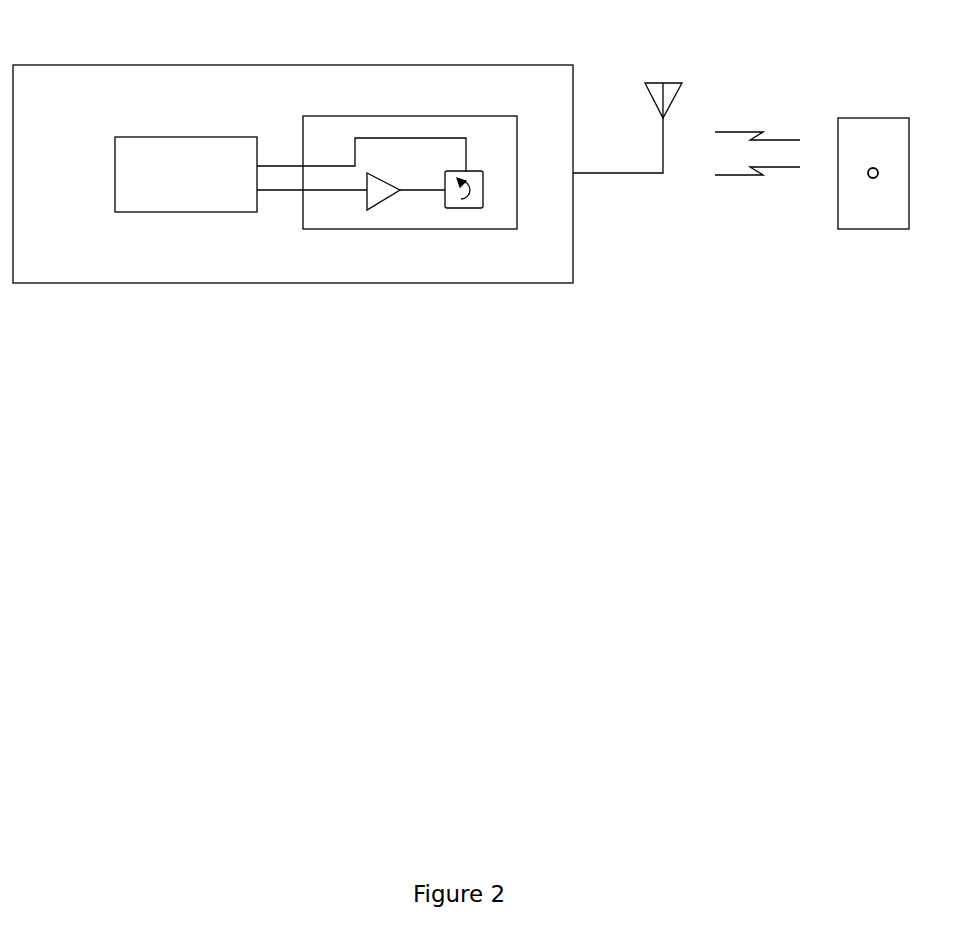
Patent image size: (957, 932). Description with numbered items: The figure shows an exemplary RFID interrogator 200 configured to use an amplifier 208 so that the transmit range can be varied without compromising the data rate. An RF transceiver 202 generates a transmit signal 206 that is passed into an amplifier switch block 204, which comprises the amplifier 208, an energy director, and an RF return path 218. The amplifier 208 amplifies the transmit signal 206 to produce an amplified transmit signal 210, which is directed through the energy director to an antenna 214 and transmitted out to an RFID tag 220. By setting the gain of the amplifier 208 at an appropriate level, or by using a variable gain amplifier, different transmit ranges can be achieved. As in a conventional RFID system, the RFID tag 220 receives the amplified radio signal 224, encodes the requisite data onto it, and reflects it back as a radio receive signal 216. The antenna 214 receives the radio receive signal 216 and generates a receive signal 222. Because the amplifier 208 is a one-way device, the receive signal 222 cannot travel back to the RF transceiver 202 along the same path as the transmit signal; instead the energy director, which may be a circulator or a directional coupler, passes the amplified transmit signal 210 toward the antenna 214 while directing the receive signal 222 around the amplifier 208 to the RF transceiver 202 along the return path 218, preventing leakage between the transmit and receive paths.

The RFID interrogator 200 is at (293, 64).
The RF transceiver 202 is at (133, 137).
The amplifier switch block 204 is at (412, 230).
The transmit signal 206 is at (288, 199).
The amplifier 208 is at (393, 195).
The amplified transmit signal 210 is at (577, 156).
The antenna 214 is at (678, 83).
The radio receive signal 216 is at (738, 187).
The RF return path 218 is at (467, 152).
The RFID tag 220 is at (875, 118).
The receive signal 222 is at (398, 127).
The transmitted RF signal 224 is at (738, 118).